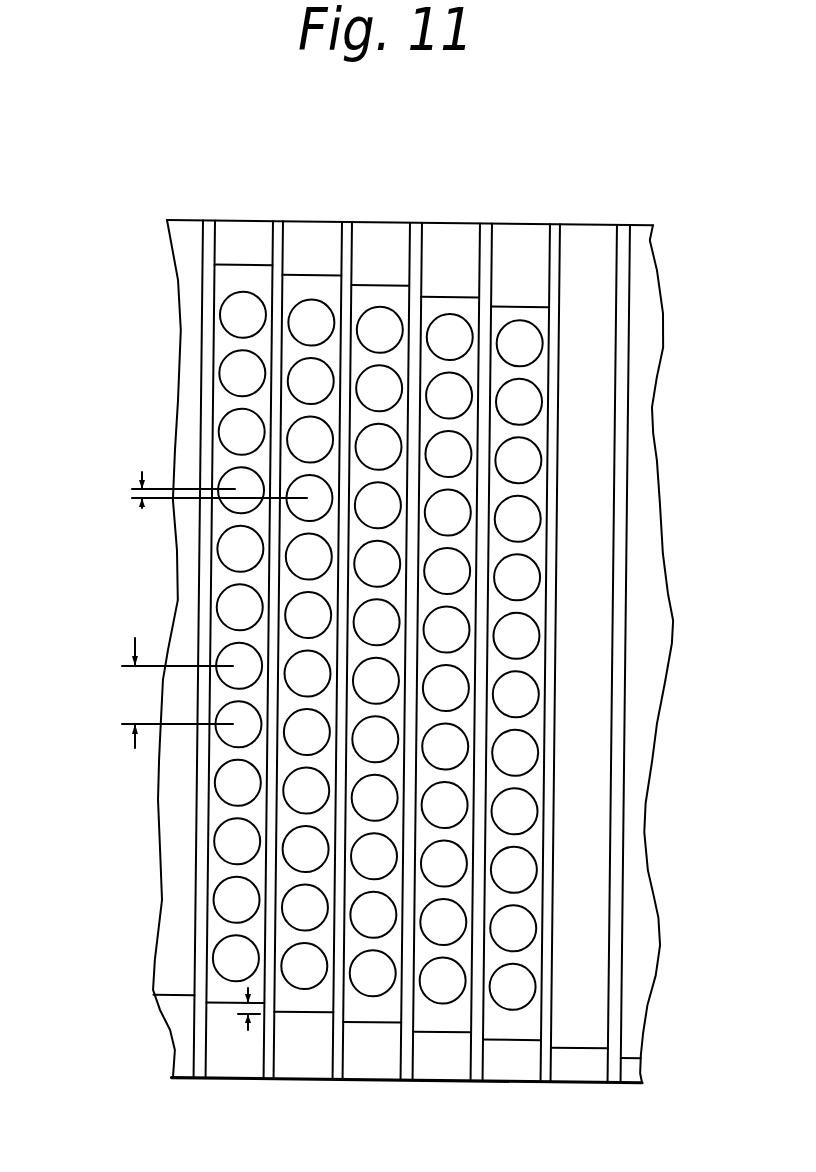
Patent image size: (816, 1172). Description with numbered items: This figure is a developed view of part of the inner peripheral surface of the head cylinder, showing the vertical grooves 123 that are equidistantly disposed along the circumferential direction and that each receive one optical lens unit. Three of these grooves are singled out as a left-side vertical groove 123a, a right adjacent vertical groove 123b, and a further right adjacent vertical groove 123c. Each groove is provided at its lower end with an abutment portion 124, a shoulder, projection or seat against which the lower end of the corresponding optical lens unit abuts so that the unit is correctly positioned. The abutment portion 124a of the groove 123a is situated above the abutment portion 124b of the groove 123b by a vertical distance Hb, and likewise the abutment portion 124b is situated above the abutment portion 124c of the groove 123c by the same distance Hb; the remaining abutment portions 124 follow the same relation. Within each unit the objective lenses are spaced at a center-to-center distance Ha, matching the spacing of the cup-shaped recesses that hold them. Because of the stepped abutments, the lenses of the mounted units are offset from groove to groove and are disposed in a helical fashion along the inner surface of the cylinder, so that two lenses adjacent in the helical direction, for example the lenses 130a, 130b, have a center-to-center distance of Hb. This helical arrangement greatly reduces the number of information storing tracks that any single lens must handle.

The vertical groove 123 is at (593, 878).
The left-side vertical groove 123a is at (241, 237).
The vertical groove 123b is at (313, 237).
The vertical groove 123c is at (383, 238).
The abutment portion 124 is at (430, 1033).
The abutment portion 124a is at (213, 1002).
The abutment portion 124b is at (293, 1012).
The abutment portion 124c is at (366, 1022).
The lens 130a is at (235, 480).
The lens 130b is at (303, 487).
The center-to-center distance Ha is at (175, 693).
The step distance Hb is at (215, 767).